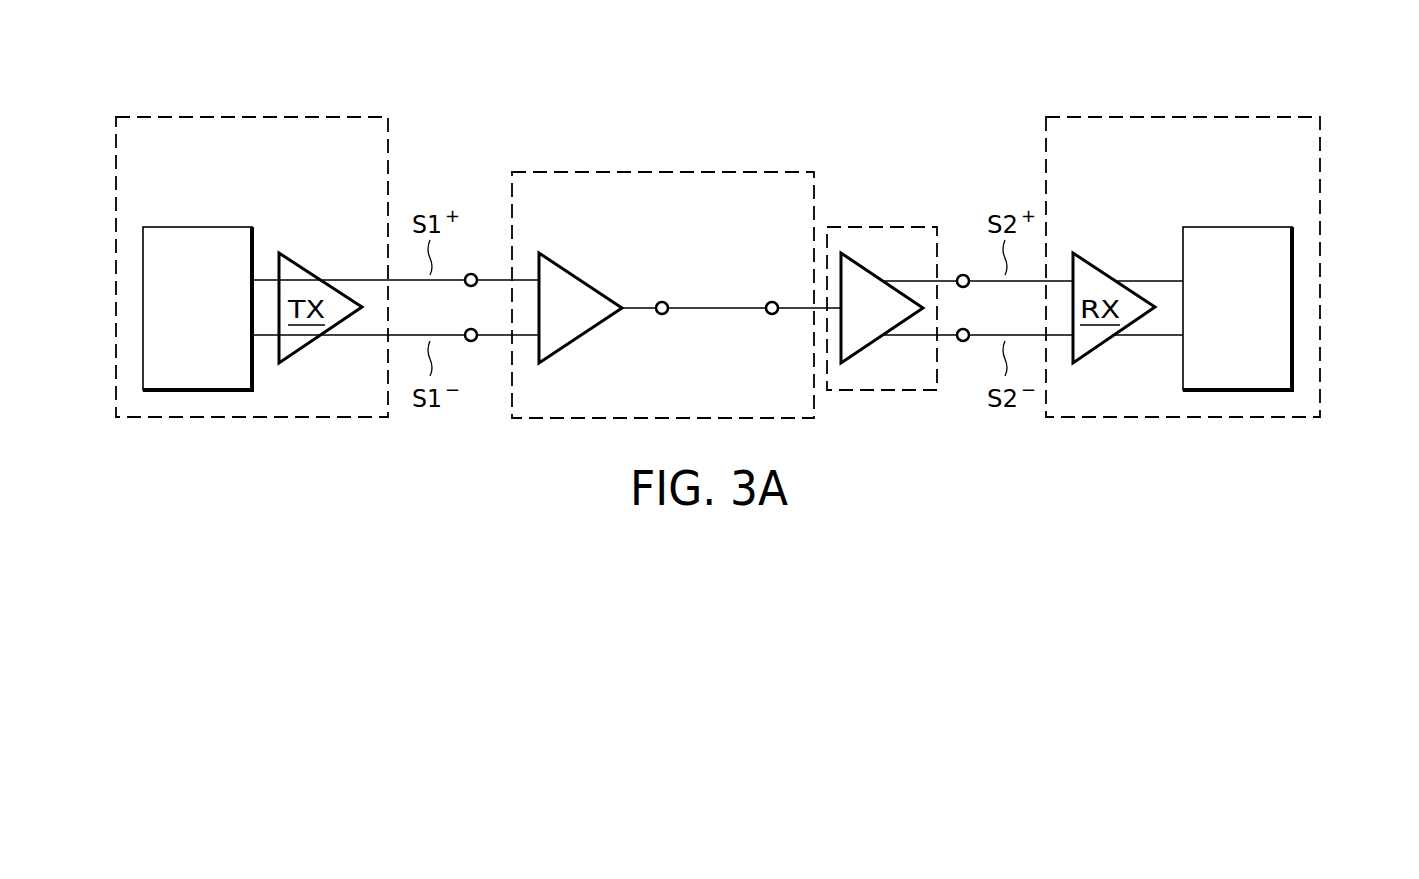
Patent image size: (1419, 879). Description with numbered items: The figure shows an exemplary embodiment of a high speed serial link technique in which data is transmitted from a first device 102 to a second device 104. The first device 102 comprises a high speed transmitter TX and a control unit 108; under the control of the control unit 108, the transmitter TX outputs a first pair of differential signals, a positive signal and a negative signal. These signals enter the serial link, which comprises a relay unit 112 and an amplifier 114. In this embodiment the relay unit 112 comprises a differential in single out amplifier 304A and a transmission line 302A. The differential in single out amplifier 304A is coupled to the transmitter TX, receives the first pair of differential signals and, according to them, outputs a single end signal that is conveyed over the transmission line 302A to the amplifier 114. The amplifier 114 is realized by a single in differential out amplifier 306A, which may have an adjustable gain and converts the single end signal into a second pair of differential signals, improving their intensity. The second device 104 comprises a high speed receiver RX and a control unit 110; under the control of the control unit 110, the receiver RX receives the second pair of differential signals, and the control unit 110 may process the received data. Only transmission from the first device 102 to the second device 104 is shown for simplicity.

The first device 102 is at (251, 117).
The second device 104 is at (1183, 117).
The control unit 108 is at (143, 307).
The control unit 110 is at (1292, 307).
The relay unit 112 is at (676, 172).
The amplifier 114 is at (881, 227).
The transmission line 302A is at (717, 308).
The differential in single out amplifier 304A is at (580, 279).
The single in differential out amplifier 306A is at (905, 317).